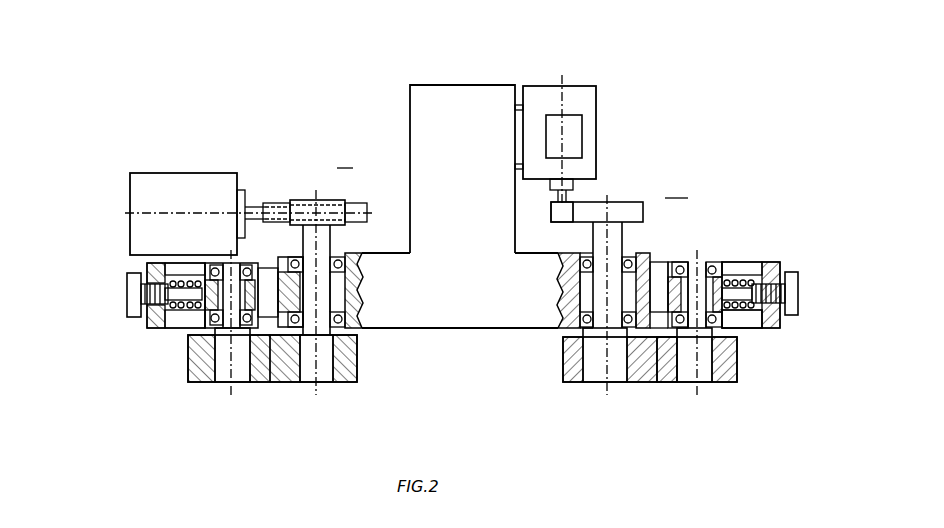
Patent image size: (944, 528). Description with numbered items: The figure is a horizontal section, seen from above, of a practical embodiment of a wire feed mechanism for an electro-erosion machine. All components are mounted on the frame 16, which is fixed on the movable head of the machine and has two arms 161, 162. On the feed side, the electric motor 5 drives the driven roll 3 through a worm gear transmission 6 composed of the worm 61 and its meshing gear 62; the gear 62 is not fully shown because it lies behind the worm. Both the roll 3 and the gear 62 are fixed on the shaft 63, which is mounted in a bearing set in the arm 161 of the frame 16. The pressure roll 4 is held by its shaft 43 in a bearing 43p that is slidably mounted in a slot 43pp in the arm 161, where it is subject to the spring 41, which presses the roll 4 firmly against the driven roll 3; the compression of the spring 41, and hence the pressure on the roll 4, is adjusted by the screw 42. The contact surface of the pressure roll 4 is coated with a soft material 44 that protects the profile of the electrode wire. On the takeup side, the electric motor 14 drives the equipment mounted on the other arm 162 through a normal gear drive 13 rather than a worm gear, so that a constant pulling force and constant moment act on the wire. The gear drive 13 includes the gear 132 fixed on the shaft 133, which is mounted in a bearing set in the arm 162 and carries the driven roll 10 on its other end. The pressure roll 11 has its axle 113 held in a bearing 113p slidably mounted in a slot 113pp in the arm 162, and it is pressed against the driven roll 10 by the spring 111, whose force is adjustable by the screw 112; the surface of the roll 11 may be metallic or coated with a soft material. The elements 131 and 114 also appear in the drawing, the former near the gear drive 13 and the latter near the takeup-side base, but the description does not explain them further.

The driven roll 3 is at (343, 374).
The pressure roll 4 is at (263, 373).
The electric motor 5 is at (158, 182).
The worm gear transmission 6 is at (345, 157).
The worm 61 is at (305, 197).
The meshing gear 62 is at (357, 204).
The shaft 63 is at (331, 243).
The driven roll 10 is at (574, 376).
The pressure roll 11 is at (722, 376).
The gear drive 13 is at (676, 186).
The electric motor 14 is at (592, 100).
The frame 16 is at (440, 90).
The spring 41 is at (183, 310).
The screw 42 is at (127, 309).
The shaft 43 is at (205, 326).
The bearing 43p is at (258, 265).
The slot 43pp is at (190, 326).
The soft material 44 is at (193, 384).
The spring 111 is at (751, 311).
The screw 112 is at (799, 278).
The axle 113 is at (701, 263).
The bearing 113p is at (679, 264).
The slot 113pp is at (737, 268).
The base plate 114 is at (738, 373).
The coupling 131 is at (558, 222).
The gear 132 is at (628, 203).
The shaft 133 is at (623, 242).
The arm 161 is at (404, 329).
The arm 162 is at (535, 329).